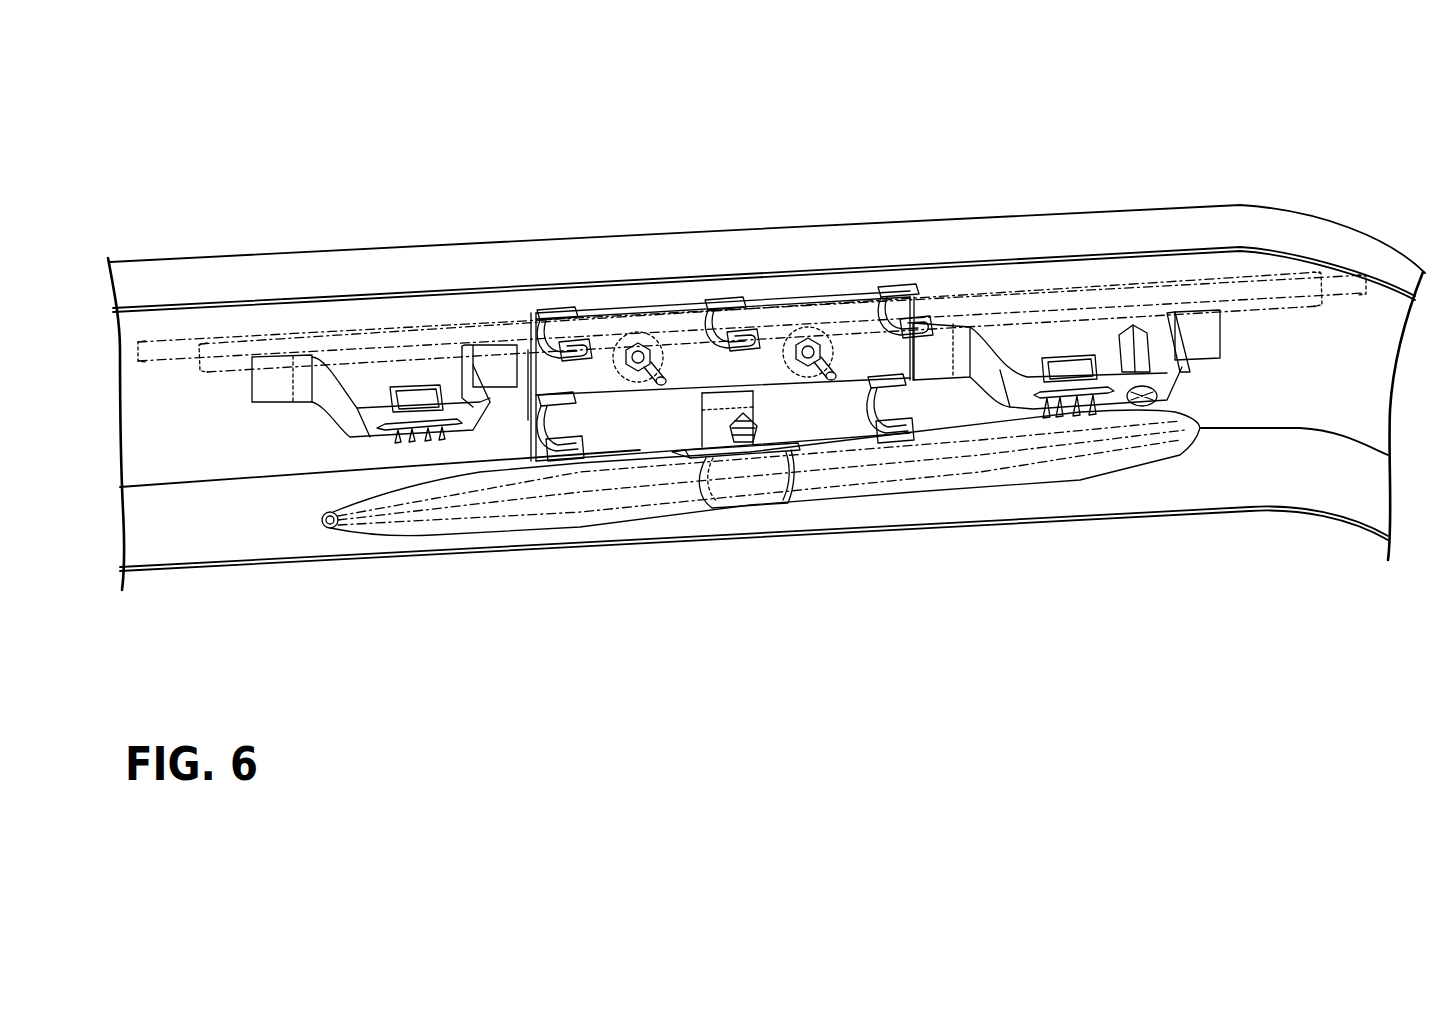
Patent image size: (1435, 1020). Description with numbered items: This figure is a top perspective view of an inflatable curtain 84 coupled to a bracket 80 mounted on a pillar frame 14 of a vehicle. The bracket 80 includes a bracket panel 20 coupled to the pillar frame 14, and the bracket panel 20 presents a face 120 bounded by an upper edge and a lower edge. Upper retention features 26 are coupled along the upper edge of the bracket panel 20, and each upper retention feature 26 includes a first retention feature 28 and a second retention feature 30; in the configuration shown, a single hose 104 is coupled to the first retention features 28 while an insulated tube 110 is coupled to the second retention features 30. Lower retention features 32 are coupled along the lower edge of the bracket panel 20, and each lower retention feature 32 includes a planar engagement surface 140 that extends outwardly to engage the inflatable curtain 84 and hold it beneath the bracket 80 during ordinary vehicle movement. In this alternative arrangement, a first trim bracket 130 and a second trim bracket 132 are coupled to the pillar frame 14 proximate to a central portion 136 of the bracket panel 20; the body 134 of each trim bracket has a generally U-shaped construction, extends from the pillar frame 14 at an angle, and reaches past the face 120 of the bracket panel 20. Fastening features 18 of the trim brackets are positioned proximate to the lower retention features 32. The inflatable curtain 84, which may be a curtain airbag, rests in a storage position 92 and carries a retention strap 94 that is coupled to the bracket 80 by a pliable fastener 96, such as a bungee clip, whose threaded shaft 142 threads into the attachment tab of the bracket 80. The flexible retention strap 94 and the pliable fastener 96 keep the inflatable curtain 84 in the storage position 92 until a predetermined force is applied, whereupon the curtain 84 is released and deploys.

The pillar frame 14 is at (1164, 230).
The fastening feature 18 is at (388, 433).
The bracket panel 20 is at (847, 377).
The upper retention features 26 is at (540, 335).
The first retention feature 28 is at (728, 298).
The second retention feature 30 is at (755, 310).
The lower retention features 32 is at (547, 425).
The bracket 80 is at (793, 297).
The inflatable curtain 84 is at (1050, 460).
The storage position 92 is at (790, 488).
The retention strap 94 is at (748, 495).
The pliable fastener 96 is at (705, 452).
The hose 104 is at (165, 330).
The insulated tube 110 is at (235, 345).
The face 120 is at (684, 381).
The first trim bracket 130 is at (265, 393).
The second trim bracket 132 is at (1197, 340).
The body 134 is at (332, 402).
The central portion 136 is at (533, 373).
The planar engagement surface 140 is at (563, 460).
The threaded shaft 142 is at (722, 445).